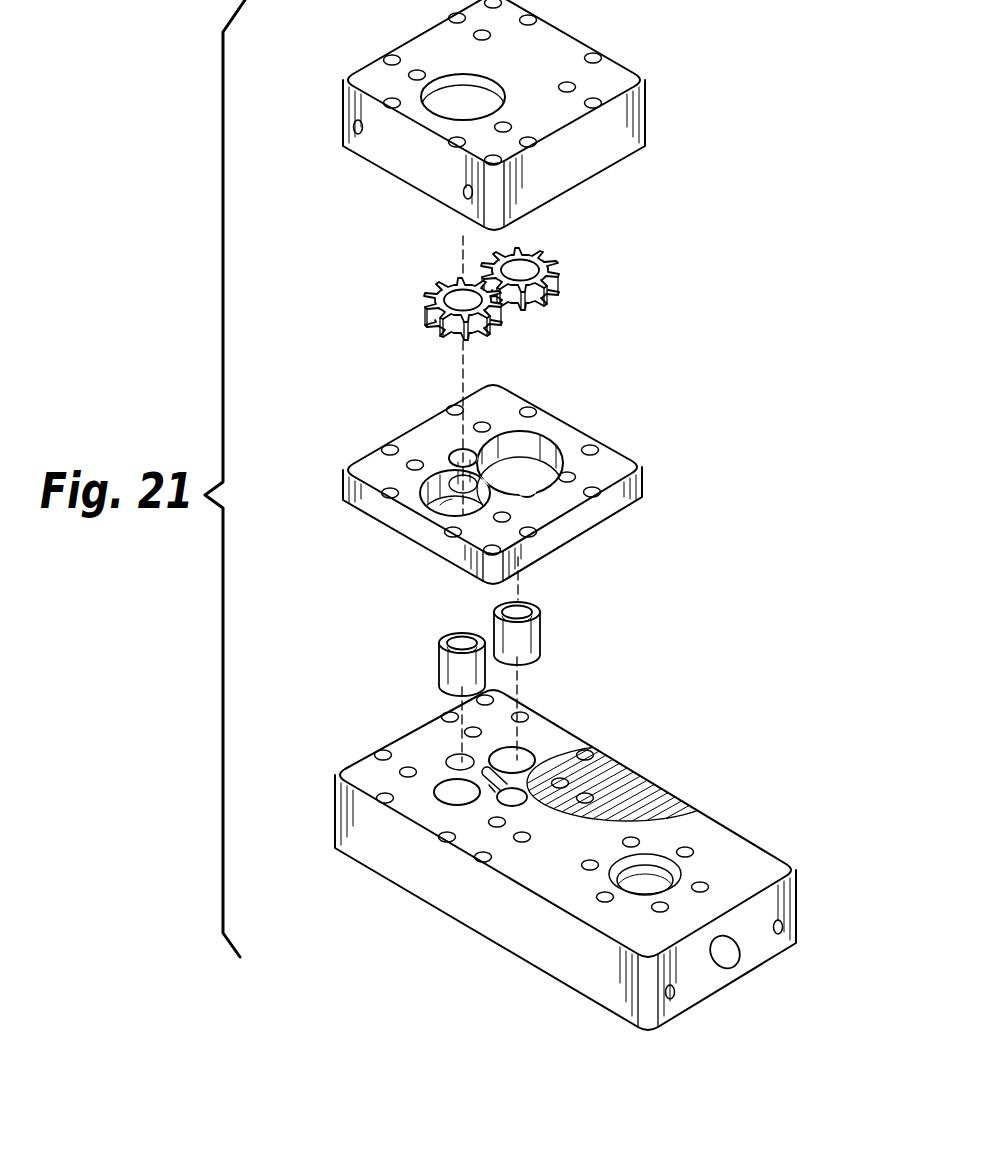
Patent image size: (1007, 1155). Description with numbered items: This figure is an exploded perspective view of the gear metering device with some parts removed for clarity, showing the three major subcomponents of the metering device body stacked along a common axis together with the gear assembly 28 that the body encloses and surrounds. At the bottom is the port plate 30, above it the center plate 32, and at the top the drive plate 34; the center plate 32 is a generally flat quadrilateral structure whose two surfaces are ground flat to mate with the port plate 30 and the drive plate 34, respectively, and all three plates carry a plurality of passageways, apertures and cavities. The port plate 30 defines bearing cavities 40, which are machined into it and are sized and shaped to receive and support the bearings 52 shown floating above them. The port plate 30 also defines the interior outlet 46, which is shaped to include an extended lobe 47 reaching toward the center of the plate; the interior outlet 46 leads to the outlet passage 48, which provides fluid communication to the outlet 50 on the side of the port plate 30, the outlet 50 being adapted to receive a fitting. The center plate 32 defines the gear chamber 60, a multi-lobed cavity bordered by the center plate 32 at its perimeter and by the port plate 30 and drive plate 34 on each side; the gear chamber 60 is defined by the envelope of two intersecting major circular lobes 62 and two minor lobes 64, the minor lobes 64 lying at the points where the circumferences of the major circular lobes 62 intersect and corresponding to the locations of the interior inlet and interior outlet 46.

The gear assembly 28 is at (557, 265).
The port plate 30 is at (576, 853).
The center plate 32 is at (466, 479).
The drive plate 34 is at (645, 112).
The bearing cavities 40 is at (525, 752).
The interior outlet 46 is at (527, 788).
The extended lobe 47 is at (497, 773).
The outlet passage 48 is at (690, 798).
The outlet 50 is at (735, 955).
The bearings 52 is at (495, 612).
The gear chamber 60 is at (432, 497).
The major circular lobes 62 is at (442, 505).
The minor lobes 64 is at (527, 497).